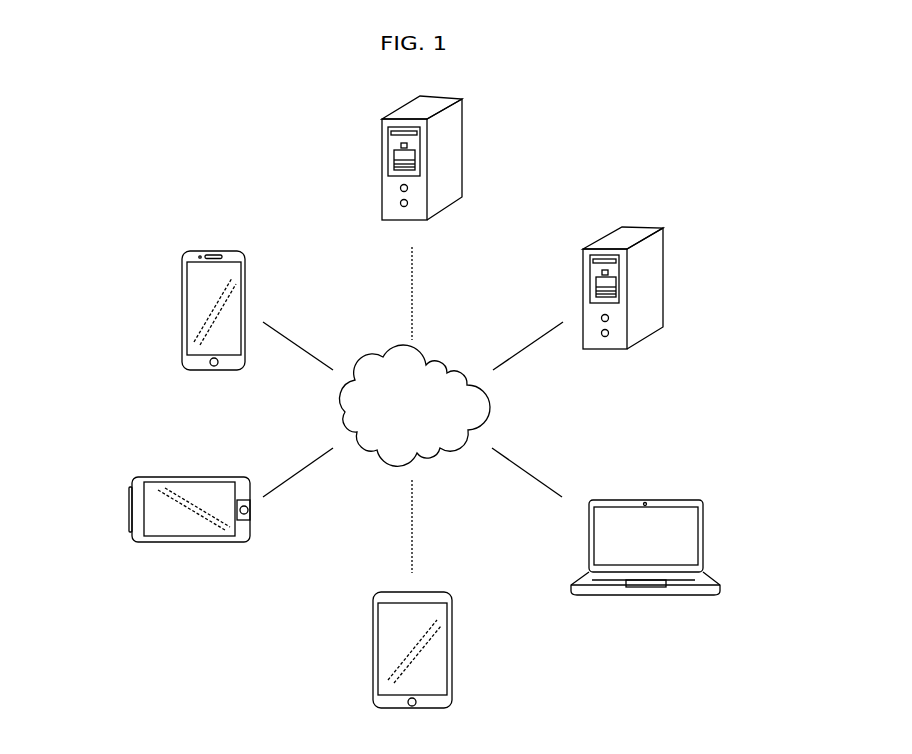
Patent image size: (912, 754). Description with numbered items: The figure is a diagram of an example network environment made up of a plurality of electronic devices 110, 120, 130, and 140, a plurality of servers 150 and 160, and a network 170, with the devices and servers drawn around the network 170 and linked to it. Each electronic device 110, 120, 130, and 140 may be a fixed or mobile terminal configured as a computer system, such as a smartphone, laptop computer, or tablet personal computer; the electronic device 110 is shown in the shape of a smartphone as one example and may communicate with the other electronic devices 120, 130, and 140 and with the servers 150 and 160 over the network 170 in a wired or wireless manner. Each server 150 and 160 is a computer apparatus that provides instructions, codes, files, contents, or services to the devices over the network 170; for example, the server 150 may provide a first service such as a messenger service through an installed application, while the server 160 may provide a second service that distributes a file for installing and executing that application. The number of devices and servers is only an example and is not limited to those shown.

The electronic device 110 is at (181, 308).
The electronic device 120 is at (130, 510).
The electronic device 130 is at (453, 650).
The electronic device 140 is at (705, 538).
The server 150 is at (663, 275).
The server 160 is at (462, 148).
The network 170 is at (436, 366).